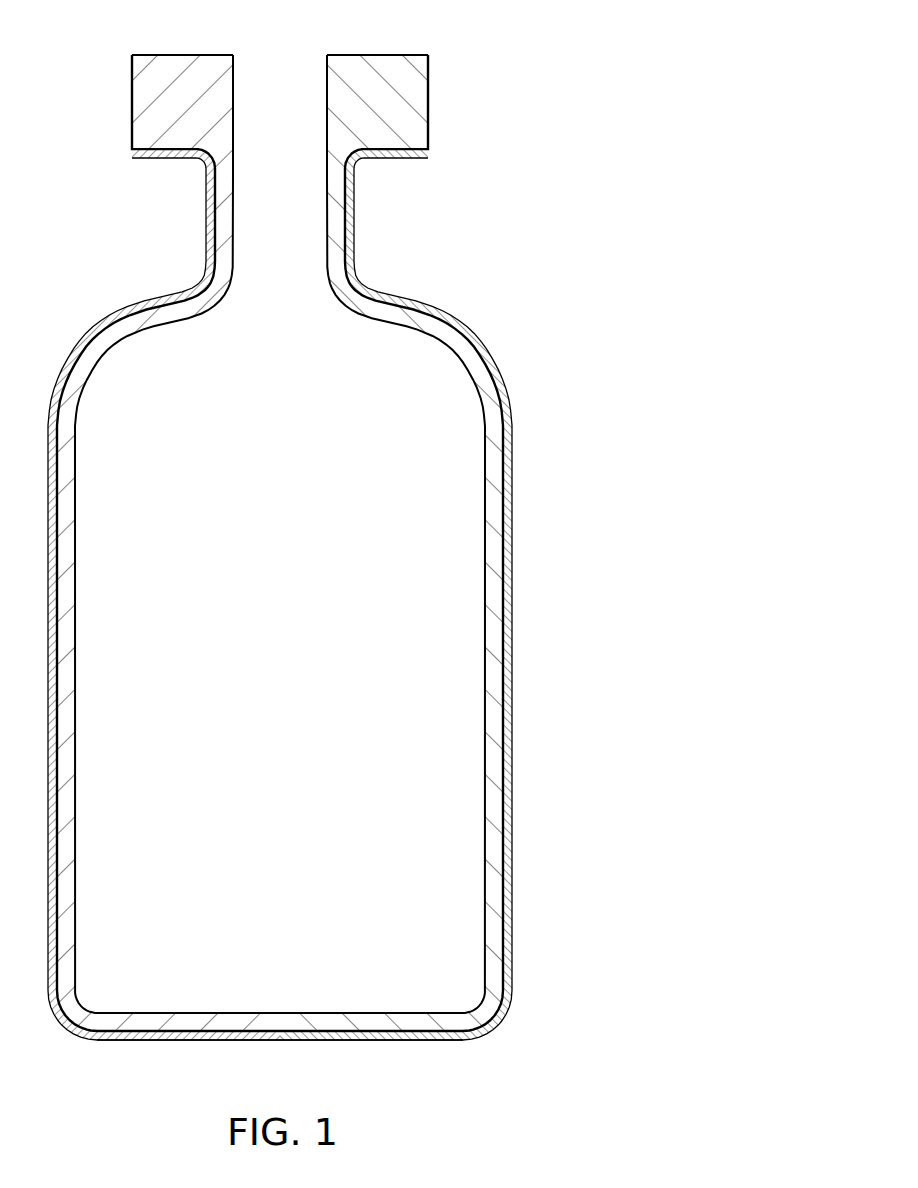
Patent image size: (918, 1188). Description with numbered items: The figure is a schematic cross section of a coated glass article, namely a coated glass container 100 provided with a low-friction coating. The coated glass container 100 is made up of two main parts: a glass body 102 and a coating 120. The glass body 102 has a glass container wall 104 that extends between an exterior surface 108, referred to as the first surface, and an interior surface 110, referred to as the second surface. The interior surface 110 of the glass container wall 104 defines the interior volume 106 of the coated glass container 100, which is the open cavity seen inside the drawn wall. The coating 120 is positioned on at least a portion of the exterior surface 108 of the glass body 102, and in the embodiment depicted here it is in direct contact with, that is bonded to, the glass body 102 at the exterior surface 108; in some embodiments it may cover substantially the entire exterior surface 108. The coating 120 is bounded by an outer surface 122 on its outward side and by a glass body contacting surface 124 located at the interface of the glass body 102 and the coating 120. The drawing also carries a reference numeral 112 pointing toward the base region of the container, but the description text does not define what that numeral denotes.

The coated glass container 100 is at (373, 585).
The glass body 102 is at (341, 84).
The glass container wall 104 is at (317, 525).
The interior volume 106 is at (303, 611).
The exterior surface 108 is at (320, 594).
The interior surface 110 is at (483, 685).
The base / bottom of the container 112 is at (301, 1095).
The coating 120 is at (507, 810).
The outer surface 122 is at (512, 600).
The glass body contacting surface 124 is at (502, 537).